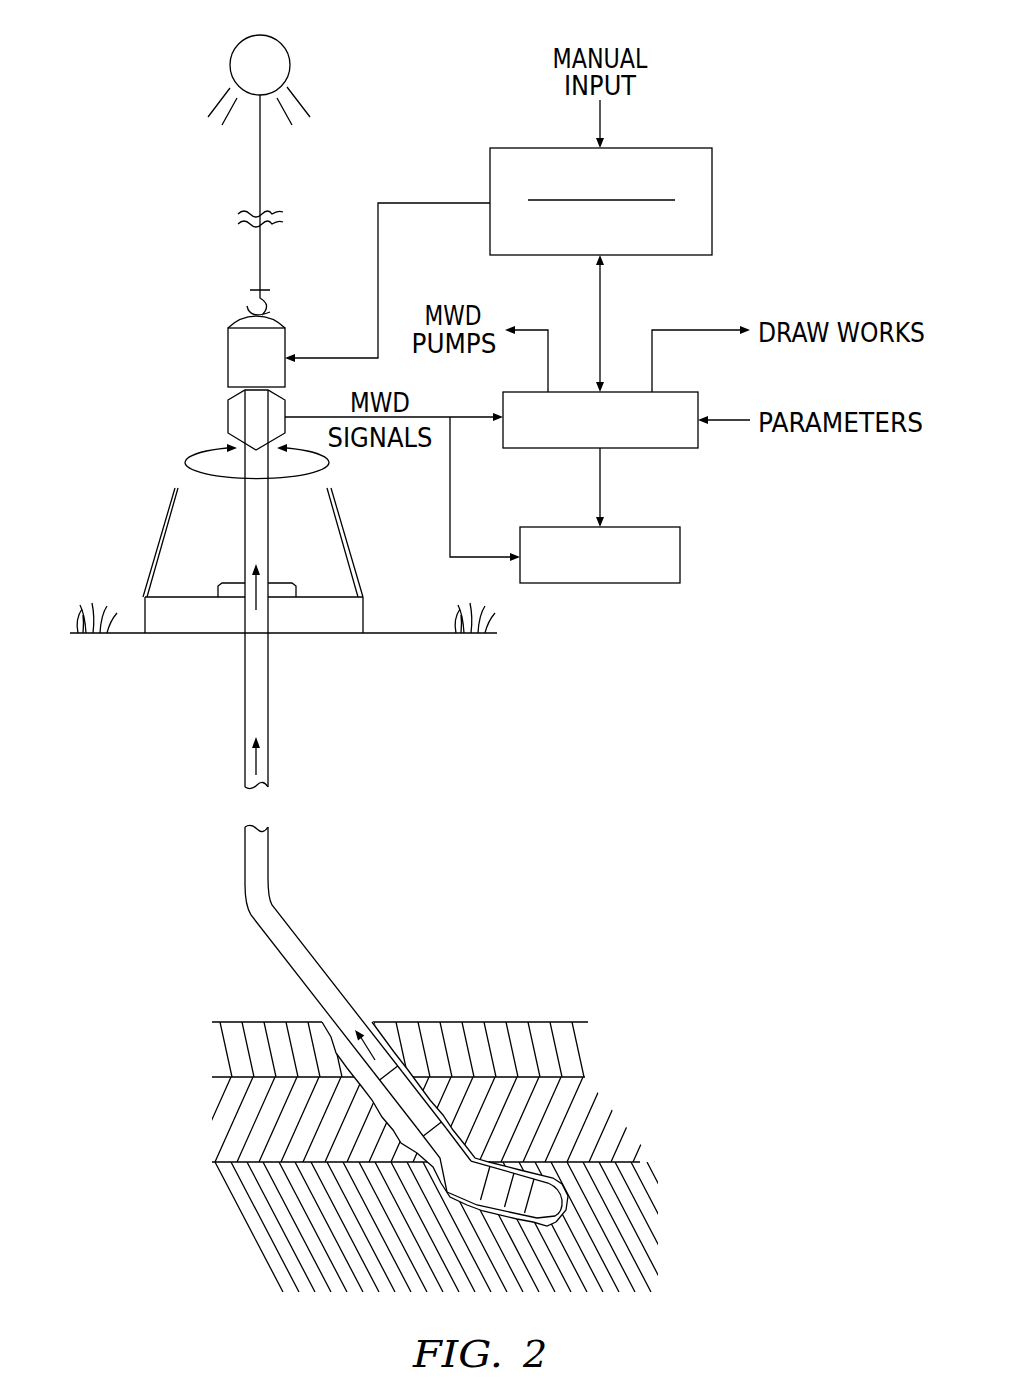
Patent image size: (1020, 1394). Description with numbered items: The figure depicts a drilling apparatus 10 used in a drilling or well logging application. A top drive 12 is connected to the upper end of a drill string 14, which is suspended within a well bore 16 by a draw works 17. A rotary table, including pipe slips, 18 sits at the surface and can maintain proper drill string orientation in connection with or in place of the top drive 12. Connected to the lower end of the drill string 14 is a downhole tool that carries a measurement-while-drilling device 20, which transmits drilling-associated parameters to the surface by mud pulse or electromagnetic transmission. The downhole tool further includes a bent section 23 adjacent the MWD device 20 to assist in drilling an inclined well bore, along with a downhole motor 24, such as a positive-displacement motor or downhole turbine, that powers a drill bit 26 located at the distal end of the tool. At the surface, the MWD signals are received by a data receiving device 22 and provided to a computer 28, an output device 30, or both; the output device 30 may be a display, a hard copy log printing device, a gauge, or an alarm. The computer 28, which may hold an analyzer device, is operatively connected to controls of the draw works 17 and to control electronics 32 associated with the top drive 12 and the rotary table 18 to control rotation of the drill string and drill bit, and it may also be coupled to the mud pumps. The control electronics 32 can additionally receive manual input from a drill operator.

The drilling apparatus 10 is at (145, 539).
The top drive 12 is at (227, 360).
The drill string 14 is at (268, 722).
The well bore 16 is at (397, 1068).
The draw works 17 is at (222, 50).
The rotary table including pipe slips 18 is at (222, 585).
The downhole telemetry measurement and transmission device (MWD device) 20 is at (433, 1112).
The data receiving device 22 is at (227, 417).
The bent section 23 is at (467, 1167).
The downhole motor 24 is at (522, 1200).
The drill bit 26 is at (557, 1203).
The computer 28 is at (683, 392).
The output device 30 is at (683, 553).
The control electronics 32 is at (713, 183).